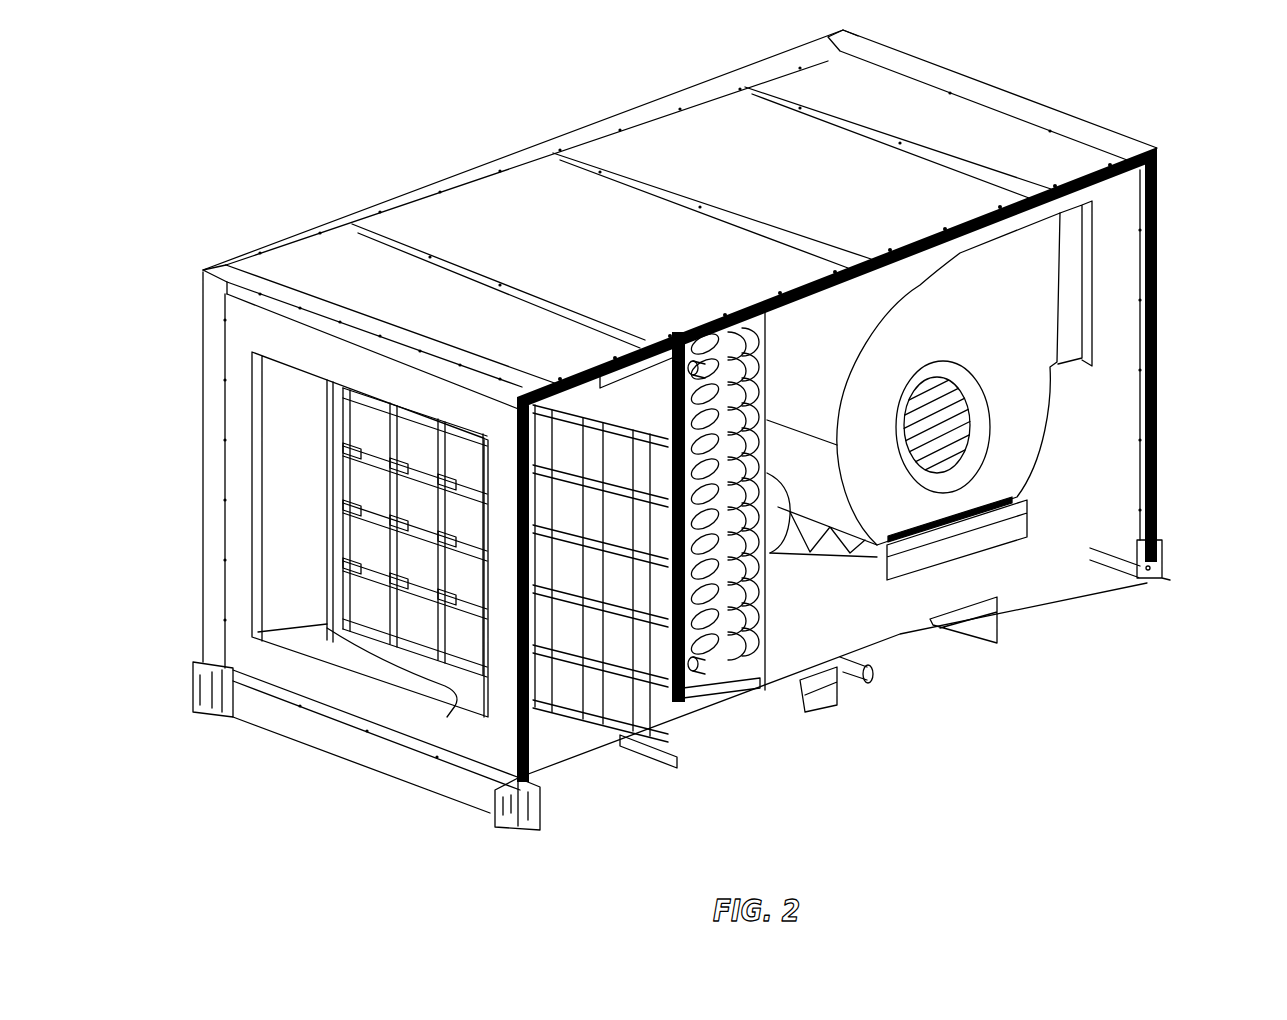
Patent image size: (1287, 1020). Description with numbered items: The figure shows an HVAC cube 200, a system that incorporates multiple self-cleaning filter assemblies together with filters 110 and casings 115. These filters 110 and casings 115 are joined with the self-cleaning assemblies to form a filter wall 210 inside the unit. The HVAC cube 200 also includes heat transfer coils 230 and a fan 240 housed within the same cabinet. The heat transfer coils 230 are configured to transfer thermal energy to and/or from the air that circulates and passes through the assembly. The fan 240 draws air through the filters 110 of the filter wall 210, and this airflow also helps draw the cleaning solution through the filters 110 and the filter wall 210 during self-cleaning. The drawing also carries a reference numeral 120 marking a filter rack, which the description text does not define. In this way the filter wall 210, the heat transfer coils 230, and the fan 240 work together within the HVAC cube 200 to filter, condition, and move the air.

The HVAC cube 200 is at (328, 88).
The filter 110 is at (375, 543).
The casing 115 is at (679, 700).
The filter rack 120 is at (560, 660).
The filter wall 210 is at (458, 690).
The heat transfer coils 230 is at (732, 558).
The fan 240 is at (1028, 387).